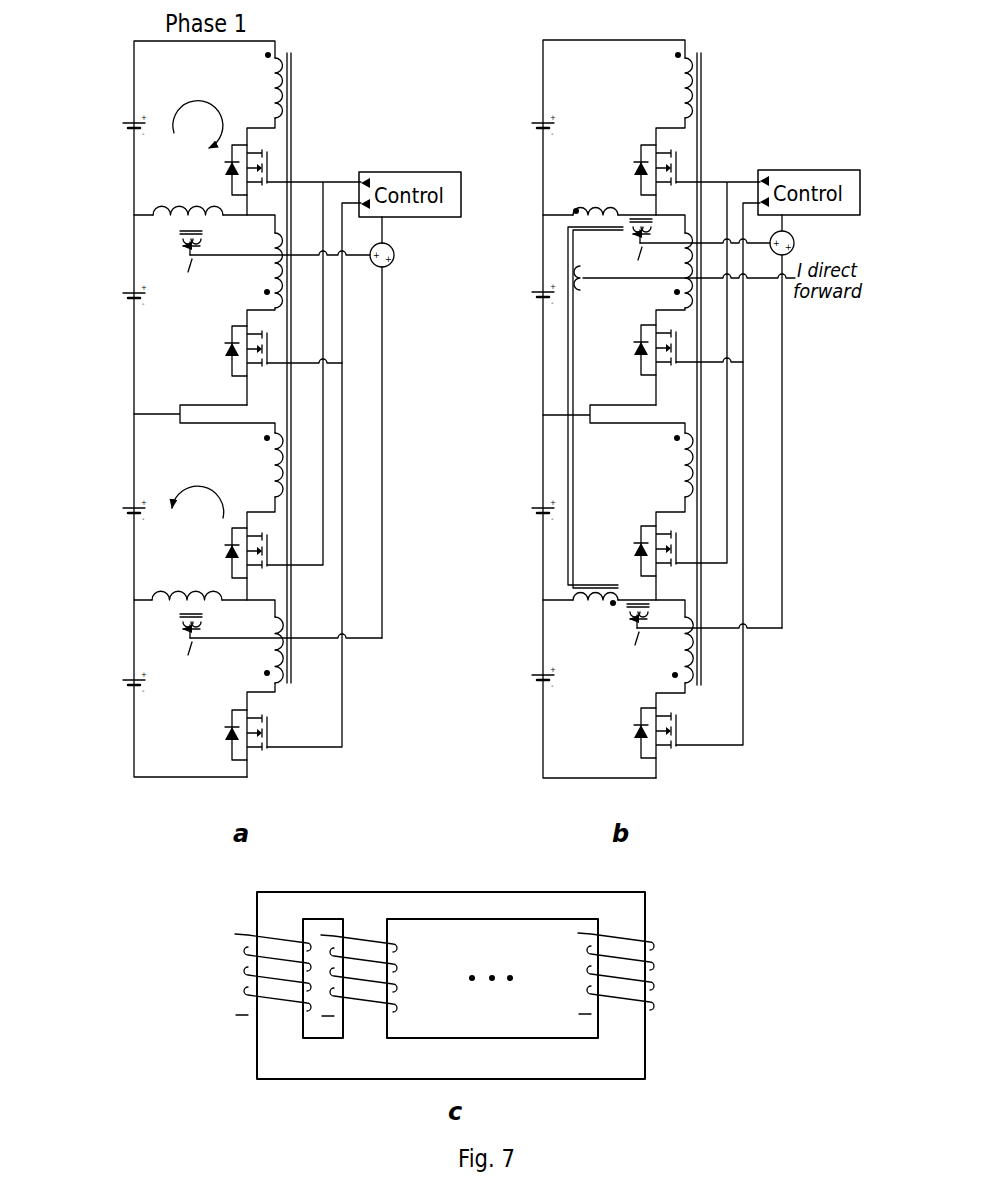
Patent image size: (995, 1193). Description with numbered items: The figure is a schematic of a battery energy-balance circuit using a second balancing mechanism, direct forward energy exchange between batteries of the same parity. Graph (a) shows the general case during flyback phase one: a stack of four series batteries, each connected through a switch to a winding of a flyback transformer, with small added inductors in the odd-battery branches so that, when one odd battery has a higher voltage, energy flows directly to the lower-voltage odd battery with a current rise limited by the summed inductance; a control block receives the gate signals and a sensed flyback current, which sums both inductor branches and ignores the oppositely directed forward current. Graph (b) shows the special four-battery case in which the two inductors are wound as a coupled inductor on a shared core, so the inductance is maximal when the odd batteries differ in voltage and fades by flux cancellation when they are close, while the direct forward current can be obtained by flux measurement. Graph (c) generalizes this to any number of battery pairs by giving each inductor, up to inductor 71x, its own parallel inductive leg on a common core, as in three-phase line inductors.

The inductor 71x is at (620, 916).